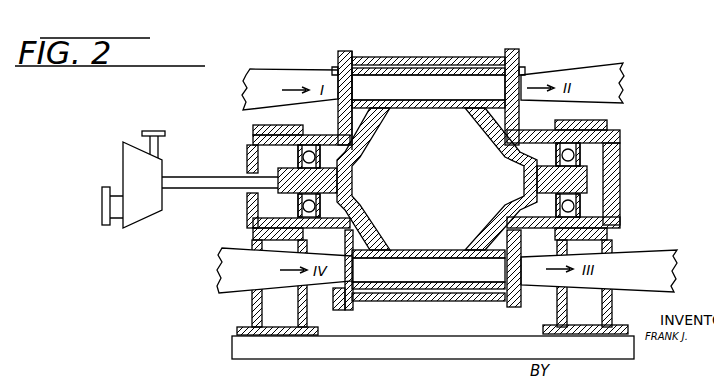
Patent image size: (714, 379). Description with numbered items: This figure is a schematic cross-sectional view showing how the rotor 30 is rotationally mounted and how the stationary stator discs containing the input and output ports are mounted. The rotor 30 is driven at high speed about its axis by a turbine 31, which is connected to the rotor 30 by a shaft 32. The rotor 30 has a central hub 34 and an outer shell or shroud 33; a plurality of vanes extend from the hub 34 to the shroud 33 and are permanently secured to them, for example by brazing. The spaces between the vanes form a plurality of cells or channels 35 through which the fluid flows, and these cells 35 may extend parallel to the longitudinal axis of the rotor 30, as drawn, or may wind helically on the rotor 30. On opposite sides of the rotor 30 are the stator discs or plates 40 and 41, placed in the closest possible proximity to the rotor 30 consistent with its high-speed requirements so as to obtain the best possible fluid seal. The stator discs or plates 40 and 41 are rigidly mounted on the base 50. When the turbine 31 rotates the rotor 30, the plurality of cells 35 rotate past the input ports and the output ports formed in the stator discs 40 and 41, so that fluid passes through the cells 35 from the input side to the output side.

The rotor 30 is at (403, 271).
The turbine 31 is at (133, 168).
The shaft 32 is at (211, 168).
The outer shell or shroud 33 is at (420, 67).
The hub 34 is at (462, 100).
The cells or channels 35 is at (446, 95).
The stator disc or plate 40 is at (351, 51).
The stator disc or plate 41 is at (512, 50).
The base 50 is at (348, 357).